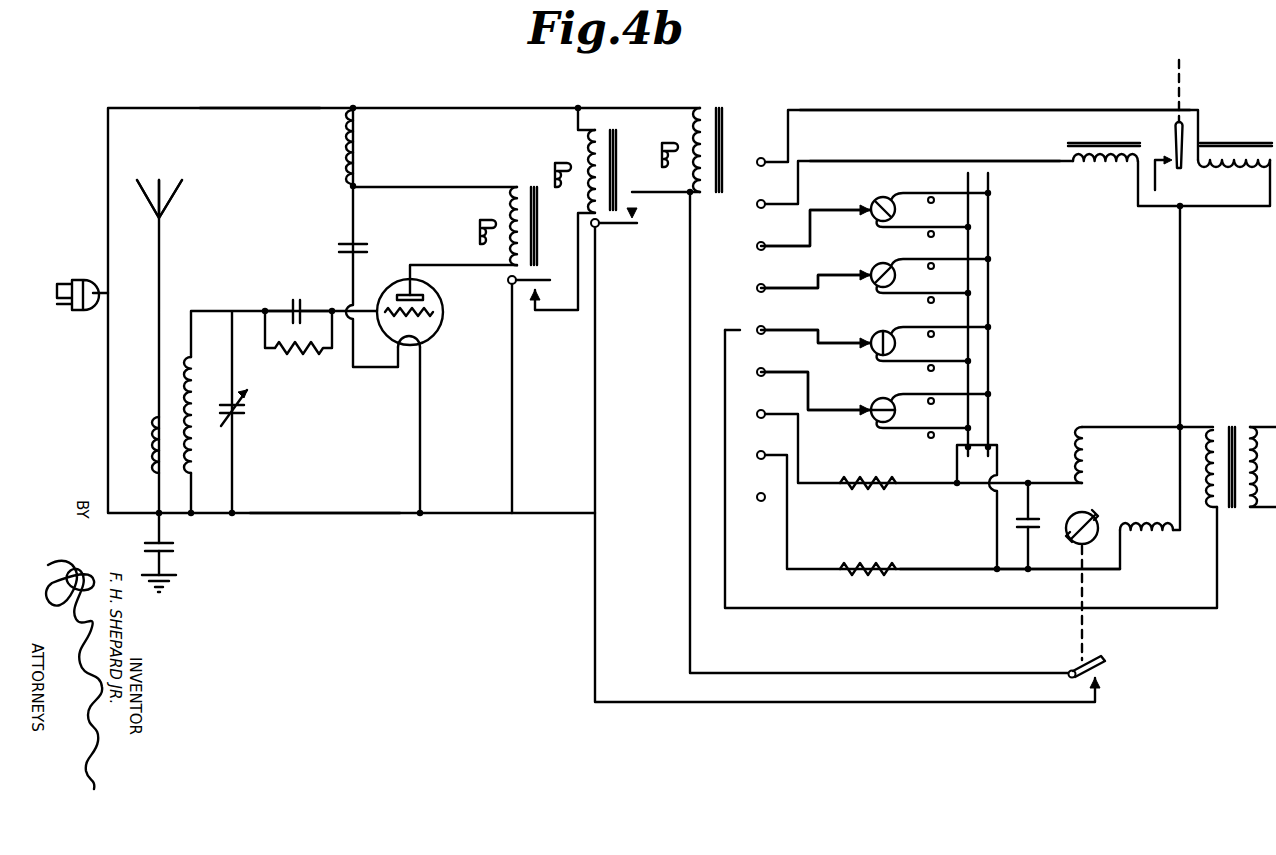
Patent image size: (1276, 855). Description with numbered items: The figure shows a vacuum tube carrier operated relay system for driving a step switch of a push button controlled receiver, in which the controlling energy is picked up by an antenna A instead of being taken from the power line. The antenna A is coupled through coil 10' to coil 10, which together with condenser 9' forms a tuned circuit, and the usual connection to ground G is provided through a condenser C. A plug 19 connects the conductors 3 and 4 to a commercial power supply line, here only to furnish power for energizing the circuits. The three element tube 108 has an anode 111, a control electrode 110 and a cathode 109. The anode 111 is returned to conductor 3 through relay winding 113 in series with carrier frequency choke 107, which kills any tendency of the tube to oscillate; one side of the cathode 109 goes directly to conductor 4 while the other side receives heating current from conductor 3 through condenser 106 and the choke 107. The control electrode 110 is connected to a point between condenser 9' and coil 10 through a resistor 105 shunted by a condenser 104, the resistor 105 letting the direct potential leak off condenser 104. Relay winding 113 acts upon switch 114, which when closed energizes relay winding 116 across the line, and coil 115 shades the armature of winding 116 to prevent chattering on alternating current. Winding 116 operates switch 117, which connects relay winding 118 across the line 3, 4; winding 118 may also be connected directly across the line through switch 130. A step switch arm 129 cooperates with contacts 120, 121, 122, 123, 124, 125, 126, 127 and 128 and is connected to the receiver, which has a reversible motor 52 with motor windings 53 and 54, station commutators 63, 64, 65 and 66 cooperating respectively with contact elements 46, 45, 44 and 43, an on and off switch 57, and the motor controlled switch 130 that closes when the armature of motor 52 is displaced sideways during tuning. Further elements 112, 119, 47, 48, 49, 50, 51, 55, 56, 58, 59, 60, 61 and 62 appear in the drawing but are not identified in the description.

The conductor 3 is at (235, 108).
The conductor 4 is at (315, 514).
The antenna A is at (172, 208).
The plug 19 is at (84, 312).
The coil 10' is at (139, 432).
The coil 10 is at (207, 426).
The condenser 9' is at (250, 414).
The condenser C is at (174, 547).
The ground G is at (168, 581).
The condenser 104 is at (293, 294).
The resistor 105 is at (301, 354).
The condenser 106 is at (356, 244).
The carrier frequency choke 107 is at (360, 158).
The three element tube 108 is at (439, 322).
The cathode 109 is at (424, 344).
The control electrode 110 is at (437, 314).
The anode 111 is at (423, 295).
The relay coil 112 is at (472, 230).
The relay winding 113 is at (512, 186).
The switch 114 is at (535, 285).
The coil 115 is at (562, 162).
The relay winding 116 is at (611, 146).
The switch 117 is at (635, 217).
The relay winding 118 is at (714, 106).
The relay coil 119 is at (667, 166).
The contact 120 is at (762, 493).
The contact 121 is at (762, 451).
The contact 122 is at (762, 410).
The contact 123 is at (762, 368).
The contact 124 is at (762, 326).
The contact 125 is at (760, 283).
The contact 126 is at (760, 241).
The contact 127 is at (760, 199).
The contact 128 is at (760, 157).
The step switch arm 129 is at (755, 330).
The motor controlled switch 130 is at (1110, 669).
The contact element 43 is at (868, 418).
The contact element 44 is at (868, 352).
The contact element 45 is at (868, 284).
The contact element 46 is at (868, 218).
The resistor 47 is at (860, 486).
The resistor 48 is at (866, 572).
The conductor 49 is at (935, 570).
The contact 50 is at (926, 486).
The condenser 51 is at (1038, 516).
The reversible motor 52 is at (1090, 514).
The motor winding 53 is at (1074, 430).
The motor winding 54 is at (1159, 540).
The transformer 55 is at (1229, 424).
The relay coil 56 is at (1104, 174).
The on and off switch 57 is at (1175, 176).
The relay coil 58 is at (1232, 142).
The conductor 59 is at (994, 109).
The conductor 60 is at (994, 159).
The bus conductor 61 is at (970, 282).
The bus conductor 62 is at (992, 216).
The station commutator 63 is at (896, 211).
The station commutator 64 is at (896, 277).
The station commutator 65 is at (896, 345).
The station commutator 66 is at (896, 412).